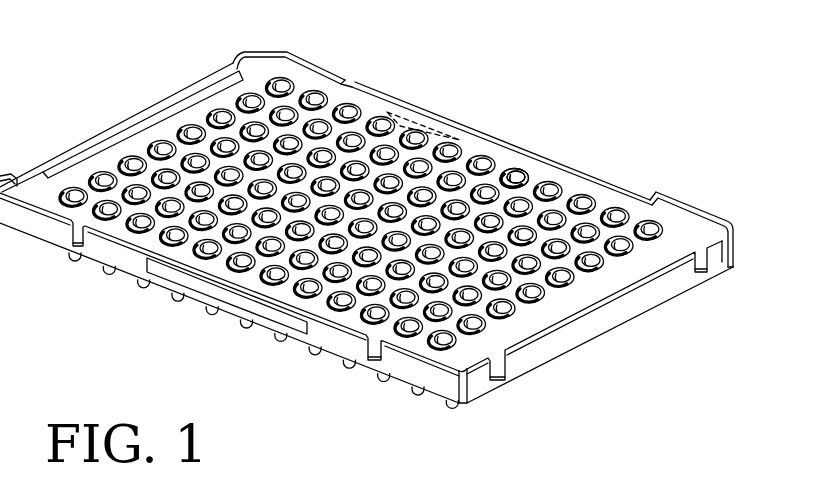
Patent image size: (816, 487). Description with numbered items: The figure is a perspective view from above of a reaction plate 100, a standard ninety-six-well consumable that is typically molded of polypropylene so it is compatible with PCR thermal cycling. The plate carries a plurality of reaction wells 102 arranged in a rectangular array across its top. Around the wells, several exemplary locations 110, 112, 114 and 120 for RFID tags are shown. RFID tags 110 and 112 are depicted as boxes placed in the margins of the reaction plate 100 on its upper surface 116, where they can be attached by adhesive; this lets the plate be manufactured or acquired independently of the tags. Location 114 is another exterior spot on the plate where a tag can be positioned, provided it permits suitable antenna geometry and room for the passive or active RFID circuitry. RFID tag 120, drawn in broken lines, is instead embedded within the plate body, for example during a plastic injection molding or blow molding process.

The reaction plate 100 is at (582, 66).
The reaction wells 102 is at (517, 177).
The RFID tag location 110 is at (233, 82).
The RFID tag location 112 is at (672, 247).
The RFID tag location 114 is at (207, 290).
The upper surface 116 is at (343, 93).
The embedded RFID tag 120 is at (425, 118).